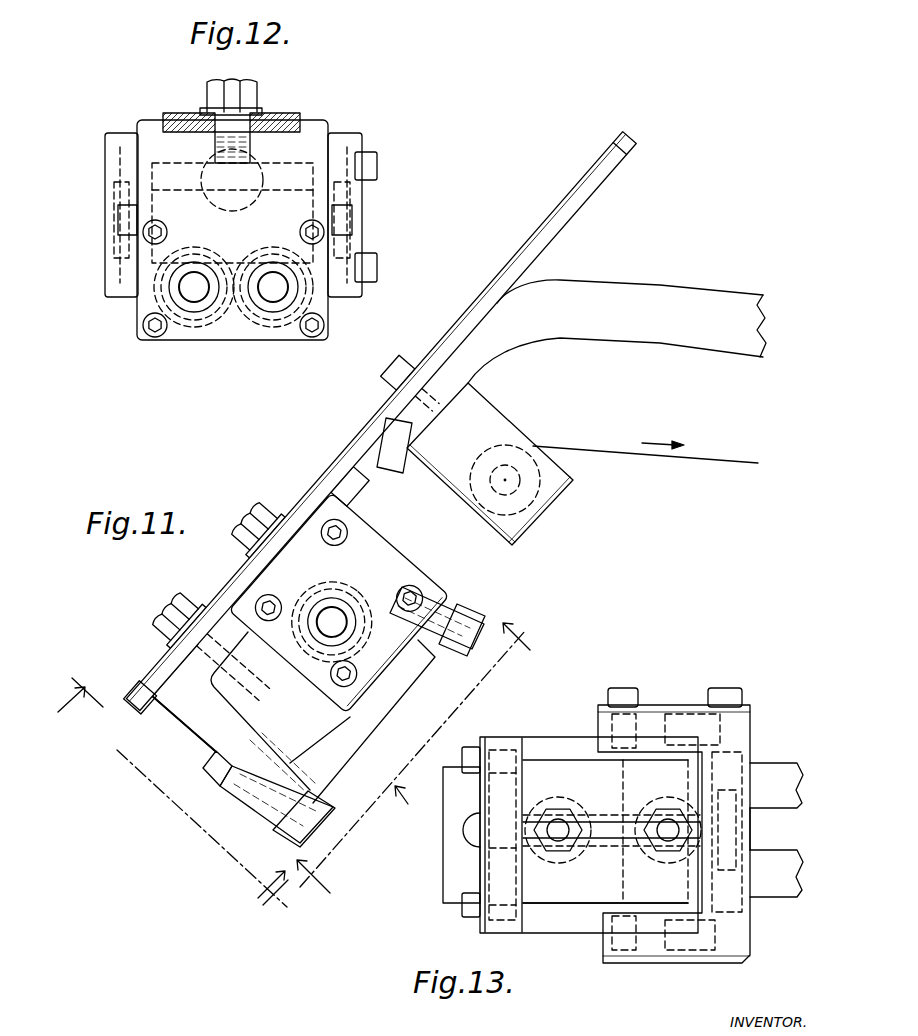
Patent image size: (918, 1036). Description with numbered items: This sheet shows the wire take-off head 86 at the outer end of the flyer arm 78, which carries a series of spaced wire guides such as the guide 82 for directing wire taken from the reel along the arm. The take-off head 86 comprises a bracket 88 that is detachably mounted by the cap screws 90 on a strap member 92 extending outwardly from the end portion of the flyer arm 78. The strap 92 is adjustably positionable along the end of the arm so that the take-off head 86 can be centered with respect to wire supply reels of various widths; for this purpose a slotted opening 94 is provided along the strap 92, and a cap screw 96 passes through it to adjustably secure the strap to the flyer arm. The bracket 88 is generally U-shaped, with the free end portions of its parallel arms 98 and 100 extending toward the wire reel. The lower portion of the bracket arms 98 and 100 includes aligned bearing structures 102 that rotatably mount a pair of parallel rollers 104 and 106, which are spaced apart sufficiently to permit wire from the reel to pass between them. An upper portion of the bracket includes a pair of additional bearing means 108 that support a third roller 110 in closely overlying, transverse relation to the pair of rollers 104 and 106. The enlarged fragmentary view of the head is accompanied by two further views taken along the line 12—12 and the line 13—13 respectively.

In FIG. 11, the line 12— 12 is at (163, 804).
In FIG. 11, the line 13— 13 is at (428, 770).
In FIG. 11, the flyer arm 78 is at (622, 282).
In FIG. 11, the guide 82 is at (549, 509).
In FIG. 11, the take-off head 86 is at (195, 698).
In FIG. 11, the bracket 88 is at (198, 743).
In FIG. 12, the cap screws 90 is at (258, 88).
In FIG. 11, the cap screws 90 is at (252, 507).
In FIG. 13, the cap screws 90 is at (668, 803).
In FIG. 12, the strap member 92 is at (294, 118).
In FIG. 11, the strap member 92 is at (539, 227).
In FIG. 13, the strap member 92 is at (443, 858).
In FIG. 12, the slotted opening 94 is at (214, 108).
In FIG. 11, the slotted opening 94 is at (132, 690).
In FIG. 13, the slotted opening 94 is at (762, 814).
In FIG. 11, the cap screw 96 is at (378, 385).
In FIG. 11, the bracket arm 98 is at (234, 712).
In FIG. 11, the bracket arm 100 is at (405, 567).
In FIG. 11, the bearing structures 102 is at (262, 807).
In FIG. 13, the bearing structures 102 is at (462, 876).
In FIG. 12, the roller 104 is at (268, 318).
In FIG. 11, the roller 104 is at (353, 749).
In FIG. 13, the roller 104 is at (545, 762).
In FIG. 12, the roller 106 is at (189, 318).
In FIG. 13, the roller 106 is at (583, 905).
In FIG. 12, the bearing means 108 is at (105, 250).
In FIG. 11, the bearing means 108 is at (296, 657).
In FIG. 13, the bearing means 108 is at (657, 705).
In FIG. 12, the third roller 110 is at (181, 195).
In FIG. 11, the third roller 110 is at (404, 666).
In FIG. 13, the third roller 110 is at (623, 785).